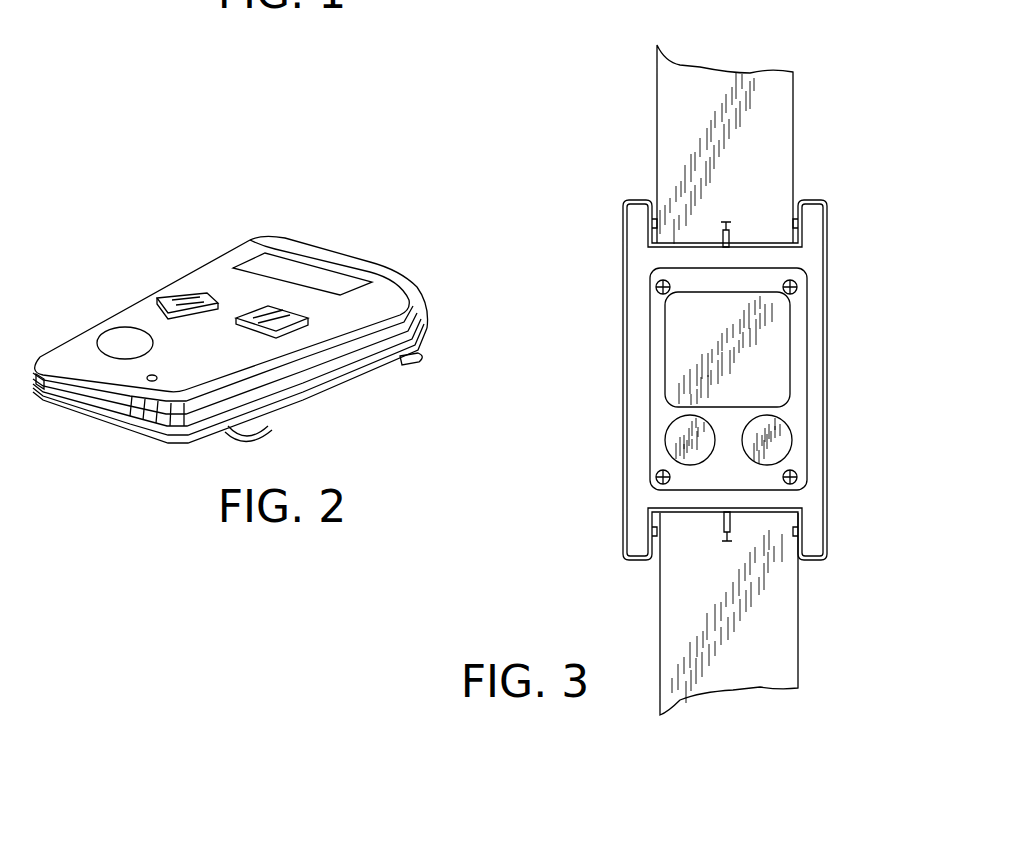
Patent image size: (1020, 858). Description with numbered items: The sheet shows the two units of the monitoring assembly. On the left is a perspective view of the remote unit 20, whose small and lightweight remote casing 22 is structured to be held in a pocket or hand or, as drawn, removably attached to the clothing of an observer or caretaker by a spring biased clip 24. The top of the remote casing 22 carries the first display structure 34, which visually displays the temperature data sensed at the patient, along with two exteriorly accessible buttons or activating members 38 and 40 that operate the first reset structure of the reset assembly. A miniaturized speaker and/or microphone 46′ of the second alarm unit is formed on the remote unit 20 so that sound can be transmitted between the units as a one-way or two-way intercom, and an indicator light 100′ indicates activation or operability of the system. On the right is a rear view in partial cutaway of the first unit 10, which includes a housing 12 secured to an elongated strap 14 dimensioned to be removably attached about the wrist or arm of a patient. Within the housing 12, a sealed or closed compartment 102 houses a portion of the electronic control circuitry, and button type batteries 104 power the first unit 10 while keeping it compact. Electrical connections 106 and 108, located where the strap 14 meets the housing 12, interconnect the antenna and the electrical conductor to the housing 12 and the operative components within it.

In FIG. 3, the first unit 10 is at (857, 292).
In FIG. 3, the housing 12 is at (822, 490).
In FIG. 3, the elongated strap 14 is at (678, 132).
In FIG. 2, the remote unit 20 is at (405, 246).
In FIG. 2, the remote casing 22 is at (207, 280).
In FIG. 2, the spring biased clip 24 is at (422, 358).
In FIG. 2, the first display structure 34 is at (297, 267).
In FIG. 2, the activating member 38 is at (303, 323).
In FIG. 2, the activating member 40 is at (173, 286).
In FIG. 2, the miniaturized speaker and/or microphone 46′ is at (123, 337).
In FIG. 2, the indicator light 100′ is at (148, 378).
In FIG. 3, the sealed compartment 102 is at (688, 348).
In FIG. 3, the button type batteries 104 is at (683, 441).
In FIG. 3, the electrical connection 106 is at (733, 236).
In FIG. 3, the electrical connection 108 is at (722, 532).